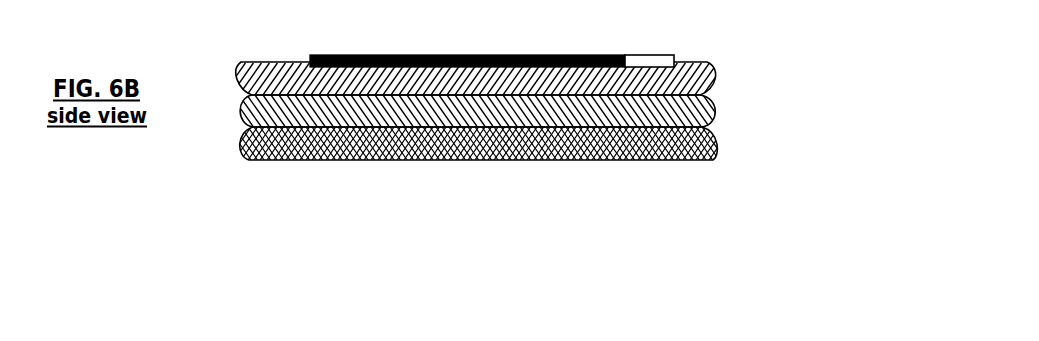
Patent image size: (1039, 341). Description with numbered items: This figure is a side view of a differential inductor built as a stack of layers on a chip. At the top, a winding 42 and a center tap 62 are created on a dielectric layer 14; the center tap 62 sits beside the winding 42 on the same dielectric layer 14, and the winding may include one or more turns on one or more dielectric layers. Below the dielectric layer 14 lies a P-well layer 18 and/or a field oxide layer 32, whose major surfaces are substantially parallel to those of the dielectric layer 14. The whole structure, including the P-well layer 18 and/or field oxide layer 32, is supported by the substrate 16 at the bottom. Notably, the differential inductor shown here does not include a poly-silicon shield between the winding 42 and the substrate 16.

The dielectric layer 14 is at (730, 78).
The P-well layer 18 is at (619, 111).
The field oxide layer 32 is at (735, 110).
The substrate 16 is at (738, 145).
The spiral winding 42 is at (459, 50).
The center tap 62 is at (651, 50).